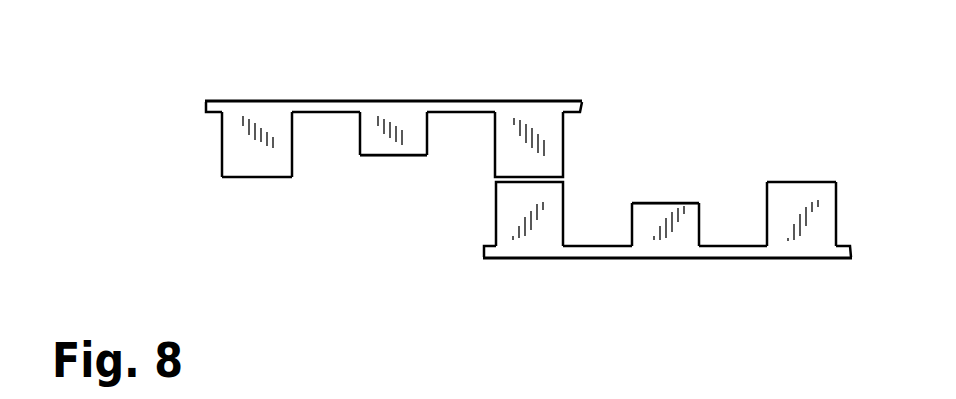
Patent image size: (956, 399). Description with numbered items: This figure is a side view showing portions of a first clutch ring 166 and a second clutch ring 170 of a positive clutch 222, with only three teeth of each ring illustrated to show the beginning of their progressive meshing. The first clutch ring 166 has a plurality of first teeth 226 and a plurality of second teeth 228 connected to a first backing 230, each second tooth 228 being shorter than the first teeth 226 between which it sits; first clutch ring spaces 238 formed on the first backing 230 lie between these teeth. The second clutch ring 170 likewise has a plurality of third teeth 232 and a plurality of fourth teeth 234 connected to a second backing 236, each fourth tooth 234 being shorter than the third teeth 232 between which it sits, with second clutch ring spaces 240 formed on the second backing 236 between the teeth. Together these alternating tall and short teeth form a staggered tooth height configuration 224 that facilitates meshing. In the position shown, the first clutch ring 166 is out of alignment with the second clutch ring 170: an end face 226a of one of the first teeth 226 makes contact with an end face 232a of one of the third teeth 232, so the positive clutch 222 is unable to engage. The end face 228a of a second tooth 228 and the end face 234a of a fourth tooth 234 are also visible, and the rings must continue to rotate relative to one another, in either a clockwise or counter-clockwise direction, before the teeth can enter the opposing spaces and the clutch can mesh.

The first clutch ring 166 is at (418, 87).
The second clutch ring 170 is at (783, 272).
The positive clutch 222 is at (145, 160).
The staggered tooth height configuration 224 is at (653, 178).
The first teeth 226 is at (236, 128).
The end face of first tooth 226a is at (238, 177).
The second teeth 228 is at (372, 127).
The end face of second tooth 228a is at (415, 158).
The first backing 230 is at (218, 100).
The third teeth 232 is at (535, 233).
The end face of third tooth 232a is at (801, 181).
The fourth teeth 234 is at (680, 232).
The end face of fourth tooth 234a is at (678, 202).
The second backing 236 is at (760, 233).
The first clutch ring spaces 238 is at (318, 128).
The second clutch ring spaces 240 is at (603, 236).